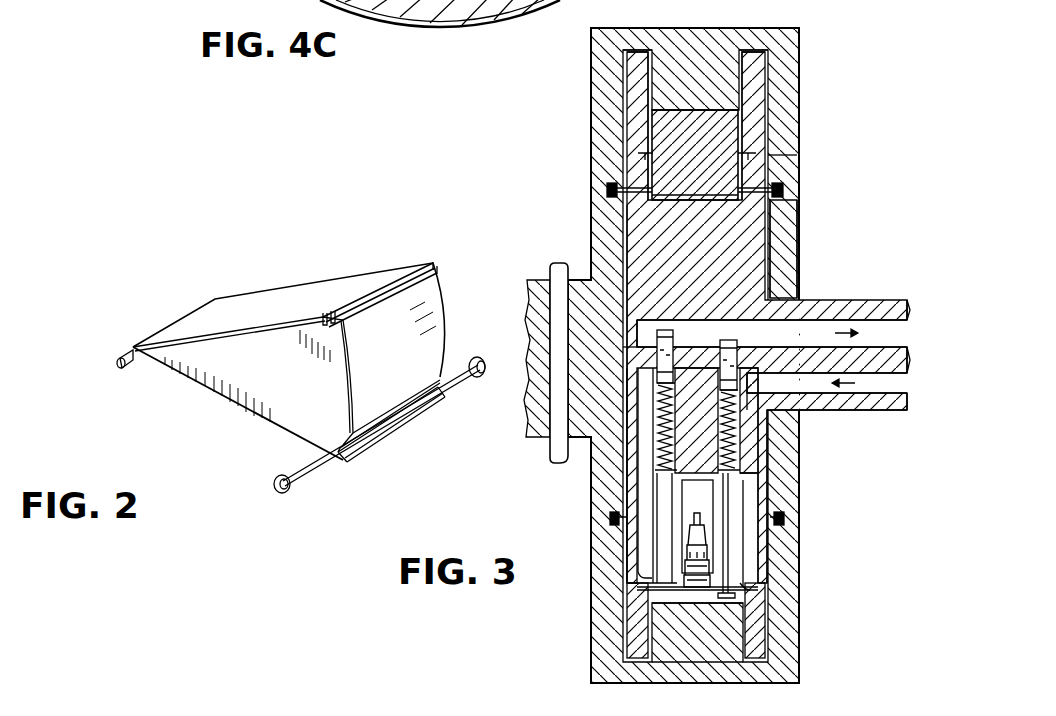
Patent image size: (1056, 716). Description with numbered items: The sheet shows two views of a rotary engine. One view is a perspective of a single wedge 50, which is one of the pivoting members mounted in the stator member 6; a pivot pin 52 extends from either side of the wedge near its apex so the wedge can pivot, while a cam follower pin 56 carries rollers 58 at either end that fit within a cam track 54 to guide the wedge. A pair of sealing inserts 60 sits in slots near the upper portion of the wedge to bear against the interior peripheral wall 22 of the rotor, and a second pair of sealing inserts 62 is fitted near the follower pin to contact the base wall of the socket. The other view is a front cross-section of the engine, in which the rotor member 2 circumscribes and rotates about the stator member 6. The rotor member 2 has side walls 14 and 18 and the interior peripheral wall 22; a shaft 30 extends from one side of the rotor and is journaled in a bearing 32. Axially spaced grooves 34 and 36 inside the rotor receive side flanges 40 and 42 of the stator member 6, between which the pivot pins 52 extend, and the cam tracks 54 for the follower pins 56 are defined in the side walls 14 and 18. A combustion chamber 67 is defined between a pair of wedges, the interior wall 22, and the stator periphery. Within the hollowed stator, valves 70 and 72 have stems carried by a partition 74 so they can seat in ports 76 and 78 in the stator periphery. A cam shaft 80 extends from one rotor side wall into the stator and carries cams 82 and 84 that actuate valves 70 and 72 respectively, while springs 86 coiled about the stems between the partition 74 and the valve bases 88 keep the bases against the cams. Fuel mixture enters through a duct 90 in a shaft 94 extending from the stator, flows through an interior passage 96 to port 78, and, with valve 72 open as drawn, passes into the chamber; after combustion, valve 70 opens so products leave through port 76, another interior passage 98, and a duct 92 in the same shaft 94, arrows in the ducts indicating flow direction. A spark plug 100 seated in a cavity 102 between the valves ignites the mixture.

In FIG. 3, the rotor member 2 is at (522, 90).
In FIG. 3, the stator member 6 is at (800, 242).
In FIG. 3, the side wall 14 is at (788, 152).
In FIG. 3, the side wall 18 is at (600, 140).
In FIG. 3, the interior peripheral wall 22 is at (690, 100).
In FIG. 3, the shaft 30 is at (545, 283).
In FIG. 3, the bearing 32 is at (535, 456).
In FIG. 3, the groove 34 is at (640, 50).
In FIG. 3, the groove 36 is at (760, 50).
In FIG. 3, the side flange 40 is at (632, 75).
In FIG. 3, the side flange 42 is at (752, 70).
In FIG. 3, the wedge 50 is at (780, 160).
In FIG. 2, the pivot pin 52 is at (122, 366).
In FIG. 3, the pivot pin 52 is at (775, 162).
In FIG. 3, the cam track 54 is at (607, 190).
In FIG. 2, the cam follower pin 56 is at (312, 478).
In FIG. 3, the cam follower pin 56 is at (617, 200).
In FIG. 2, the roller 58 is at (278, 492).
In FIG. 2, the sealing insert 60 is at (425, 262).
In FIG. 2, the sealing insert 62 is at (368, 458).
In FIG. 3, the chamber 67 is at (735, 625).
In FIG. 3, the valve 70 is at (658, 497).
In FIG. 3, the valve 72 is at (735, 500).
In FIG. 3, the partition 74 is at (726, 475).
In FIG. 3, the port 76 is at (640, 577).
In FIG. 3, the port 78 is at (755, 568).
In FIG. 3, the cam shaft 80 is at (675, 338).
In FIG. 3, the cam 82 is at (640, 300).
In FIG. 3, the cam 84 is at (738, 345).
In FIG. 3, the spring 86 is at (760, 450).
In FIG. 3, the valve base 88 is at (757, 395).
In FIG. 3, the duct 90 is at (893, 392).
In FIG. 3, the duct 92 is at (893, 326).
In FIG. 3, the shaft 94 is at (820, 305).
In FIG. 3, the interior passage 96 is at (742, 545).
In FIG. 3, the interior passage 98 is at (648, 538).
In FIG. 3, the spark plug 100 is at (690, 562).
In FIG. 3, the cavity 102 is at (686, 503).